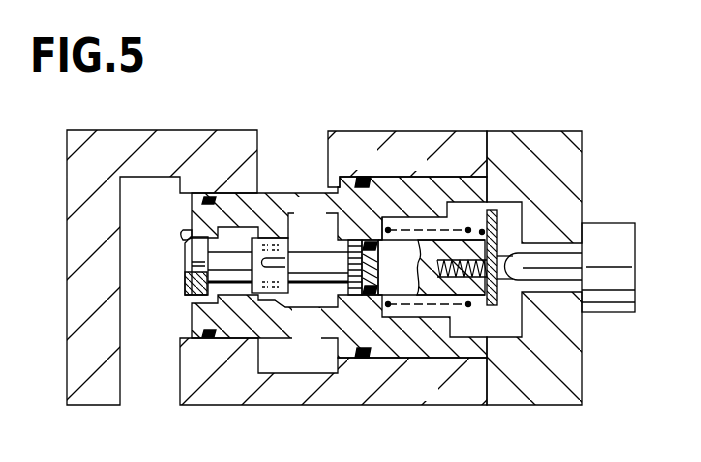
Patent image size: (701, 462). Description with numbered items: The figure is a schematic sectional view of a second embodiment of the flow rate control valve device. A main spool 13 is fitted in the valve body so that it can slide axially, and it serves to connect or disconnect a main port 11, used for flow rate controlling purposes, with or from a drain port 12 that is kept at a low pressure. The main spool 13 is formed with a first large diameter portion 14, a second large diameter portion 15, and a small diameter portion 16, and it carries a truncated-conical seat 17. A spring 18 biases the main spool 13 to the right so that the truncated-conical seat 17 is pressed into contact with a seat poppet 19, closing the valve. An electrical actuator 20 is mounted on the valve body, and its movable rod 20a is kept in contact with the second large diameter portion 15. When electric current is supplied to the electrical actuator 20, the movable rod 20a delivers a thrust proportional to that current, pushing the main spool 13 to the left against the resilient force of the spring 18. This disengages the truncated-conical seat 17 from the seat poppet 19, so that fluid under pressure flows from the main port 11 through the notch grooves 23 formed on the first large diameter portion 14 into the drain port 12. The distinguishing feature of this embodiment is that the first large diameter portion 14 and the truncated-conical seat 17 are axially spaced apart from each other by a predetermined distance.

The main port 11 is at (328, 131).
The drain port 12 is at (120, 370).
The main spool 13 is at (345, 215).
The first large diameter portion 14 is at (277, 236).
The second large diameter portion 15 is at (395, 290).
The small diameter portion 16 is at (307, 281).
The truncated-conical seat 17 is at (193, 265).
The spring 18 is at (468, 230).
The seat poppet 19 is at (187, 235).
The electrical actuator 20 is at (606, 233).
The movable rod 20a is at (582, 312).
The notch grooves 23 is at (325, 250).